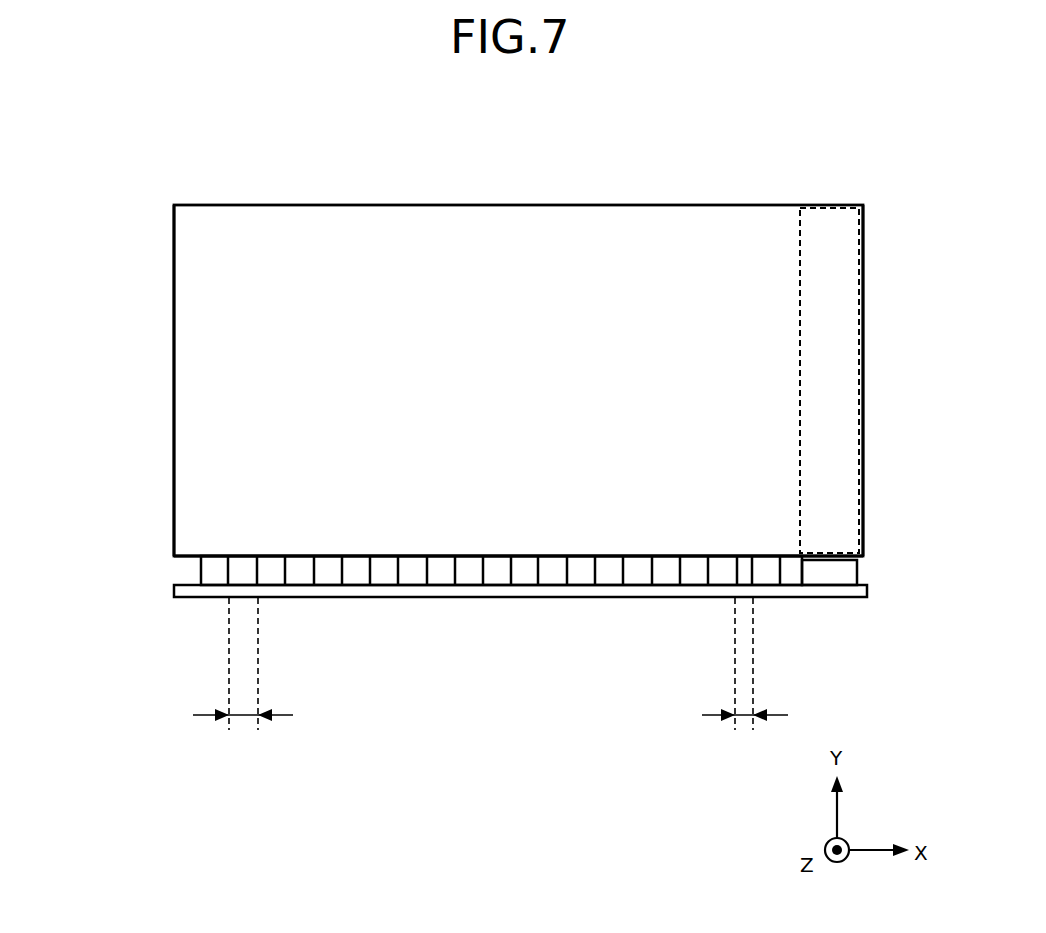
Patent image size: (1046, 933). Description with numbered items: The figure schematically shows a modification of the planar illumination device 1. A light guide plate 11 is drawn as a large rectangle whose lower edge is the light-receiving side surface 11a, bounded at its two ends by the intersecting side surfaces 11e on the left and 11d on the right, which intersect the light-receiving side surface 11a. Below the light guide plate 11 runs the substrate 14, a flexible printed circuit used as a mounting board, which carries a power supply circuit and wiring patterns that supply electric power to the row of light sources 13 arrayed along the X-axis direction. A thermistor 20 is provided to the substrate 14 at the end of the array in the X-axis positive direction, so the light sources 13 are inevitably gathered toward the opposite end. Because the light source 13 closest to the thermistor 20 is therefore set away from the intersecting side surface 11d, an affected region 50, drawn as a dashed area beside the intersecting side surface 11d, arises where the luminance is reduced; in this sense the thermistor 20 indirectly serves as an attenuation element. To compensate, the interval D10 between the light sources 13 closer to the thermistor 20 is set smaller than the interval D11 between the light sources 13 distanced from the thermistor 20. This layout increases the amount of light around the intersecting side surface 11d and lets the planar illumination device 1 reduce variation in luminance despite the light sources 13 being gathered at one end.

The planar illumination device 1 is at (78, 143).
The light guide plate 11 is at (174, 257).
The light-receiving side surface 11a is at (188, 555).
The intersecting side surface 11d is at (863, 380).
The intersecting side surface 11e is at (174, 378).
The light sources 13 is at (201, 568).
The substrate 14 is at (500, 598).
The thermistor 20 is at (838, 572).
The affected region 50 is at (840, 283).
The interval D11 is at (243, 718).
The interval D10 is at (744, 718).